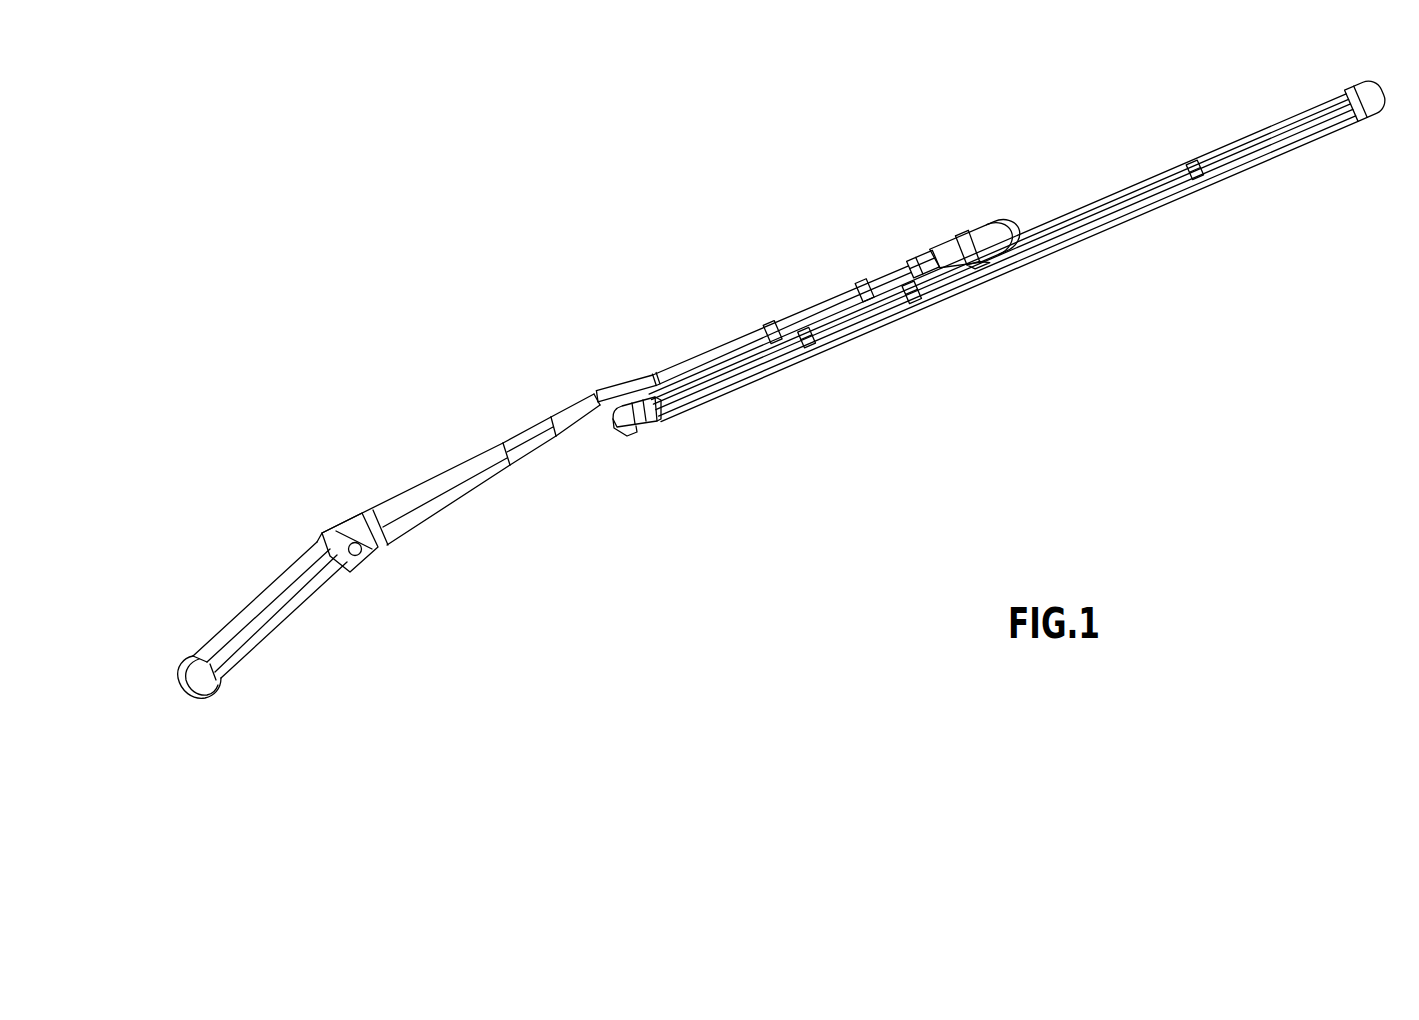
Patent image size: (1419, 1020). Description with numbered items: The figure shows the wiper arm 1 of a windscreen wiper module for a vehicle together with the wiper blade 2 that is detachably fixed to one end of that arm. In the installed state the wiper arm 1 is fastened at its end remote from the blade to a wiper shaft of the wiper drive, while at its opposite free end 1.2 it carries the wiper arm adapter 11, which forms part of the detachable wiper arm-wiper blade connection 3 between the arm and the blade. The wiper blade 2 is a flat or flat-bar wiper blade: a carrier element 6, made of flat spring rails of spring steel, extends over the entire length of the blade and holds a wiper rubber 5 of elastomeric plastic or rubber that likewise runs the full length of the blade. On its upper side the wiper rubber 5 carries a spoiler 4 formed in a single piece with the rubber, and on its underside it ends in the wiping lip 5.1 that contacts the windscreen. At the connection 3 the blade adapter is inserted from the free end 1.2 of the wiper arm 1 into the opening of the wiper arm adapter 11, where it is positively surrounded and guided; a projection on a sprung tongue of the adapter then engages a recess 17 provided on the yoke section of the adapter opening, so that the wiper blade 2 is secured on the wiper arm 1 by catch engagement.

The wiper arm 1 is at (618, 362).
The free end 1.2 is at (1027, 201).
The wiper blade 2 is at (1084, 254).
The wiper arm-wiper blade connection 3 is at (952, 220).
The spoiler 4 is at (1198, 122).
The wiper rubber 5 is at (845, 397).
The wiping lip 5.1 is at (938, 379).
The carrier element 6 is at (995, 301).
The wiper arm adapter 11 is at (610, 405).
The recess 17 is at (1006, 325).